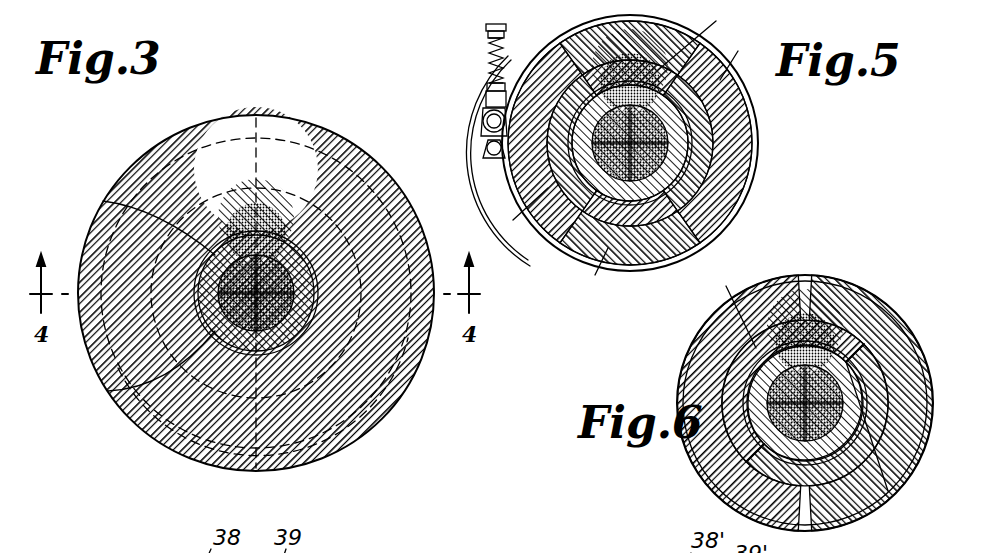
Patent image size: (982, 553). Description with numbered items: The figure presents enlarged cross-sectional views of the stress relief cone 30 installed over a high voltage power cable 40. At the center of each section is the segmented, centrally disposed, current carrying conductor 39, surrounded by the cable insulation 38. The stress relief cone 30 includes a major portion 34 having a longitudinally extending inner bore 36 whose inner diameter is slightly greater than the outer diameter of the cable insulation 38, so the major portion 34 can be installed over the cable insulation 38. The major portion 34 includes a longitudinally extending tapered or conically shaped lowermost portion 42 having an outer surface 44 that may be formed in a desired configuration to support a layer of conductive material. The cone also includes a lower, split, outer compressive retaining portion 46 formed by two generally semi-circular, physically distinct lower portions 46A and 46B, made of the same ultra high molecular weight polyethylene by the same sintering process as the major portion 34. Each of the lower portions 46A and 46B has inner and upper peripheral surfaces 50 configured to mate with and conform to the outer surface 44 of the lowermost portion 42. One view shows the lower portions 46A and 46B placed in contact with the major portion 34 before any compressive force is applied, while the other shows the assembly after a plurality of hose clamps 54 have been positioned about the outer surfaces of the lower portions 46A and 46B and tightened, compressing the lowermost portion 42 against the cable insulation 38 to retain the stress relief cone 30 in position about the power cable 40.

In FIG. 3, the stress relief cone 30 is at (302, 66).
In FIG. 5, the stress relief cone 30 is at (847, 118).
In FIG. 6, the stress relief cone 30 is at (919, 237).
In FIG. 3, the major portion 34 is at (152, 140).
In FIG. 3, the inner bore 36 is at (303, 240).
In FIG. 5, the inner bore 36 is at (497, 188).
In FIG. 6, the inner bore 36 is at (853, 326).
In FIG. 3, the cable insulation 38 is at (100, 383).
In FIG. 5, the cable insulation 38 is at (697, 153).
In FIG. 6, the cable insulation 38 is at (722, 366).
In FIG. 3, the current carrying conductor 39 is at (95, 193).
In FIG. 5, the current carrying conductor 39 is at (606, 264).
In FIG. 6, the current carrying conductor 39 is at (702, 477).
In FIG. 3, the high voltage power cable 40 is at (296, 322).
In FIG. 5, the high voltage power cable 40 is at (695, 128).
In FIG. 6, the high voltage power cable 40 is at (850, 358).
In FIG. 5, the lowermost portion 42 is at (650, 62).
In FIG. 6, the lowermost portion 42 is at (877, 440).
In FIG. 5, the outer surface 44 is at (582, 60).
In FIG. 6, the outer surface 44 is at (688, 455).
In FIG. 3, the outer compressive retaining portion 46 is at (185, 142).
In FIG. 5, the outer compressive retaining portion 46 is at (712, 208).
In FIG. 6, the outer compressive retaining portion 46 is at (842, 272).
In FIG. 3, the lower portion 46A is at (133, 427).
In FIG. 5, the lower portion 46A is at (587, 268).
In FIG. 6, the lower portion 46A is at (698, 331).
In FIG. 3, the lower portion 46B is at (300, 423).
In FIG. 5, the lower portion 46B is at (738, 170).
In FIG. 6, the lower portion 46B is at (850, 290).
In FIG. 5, the inner and upper peripheral surfaces 50 is at (626, 148).
In FIG. 6, the inner and upper peripheral surfaces 50 is at (900, 494).
In FIG. 5, the hose clamps 54 is at (475, 112).